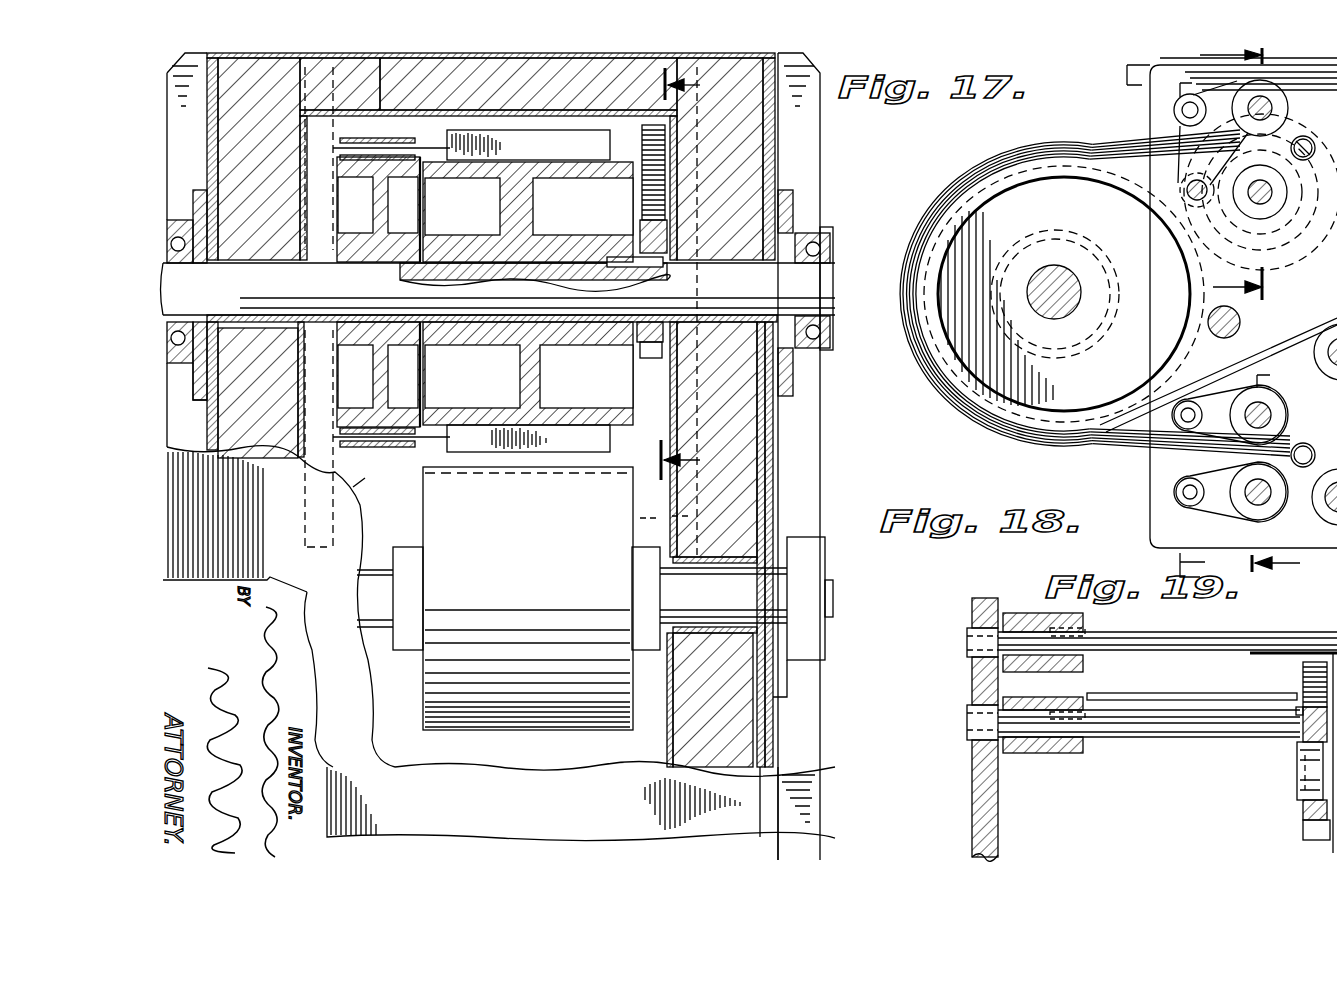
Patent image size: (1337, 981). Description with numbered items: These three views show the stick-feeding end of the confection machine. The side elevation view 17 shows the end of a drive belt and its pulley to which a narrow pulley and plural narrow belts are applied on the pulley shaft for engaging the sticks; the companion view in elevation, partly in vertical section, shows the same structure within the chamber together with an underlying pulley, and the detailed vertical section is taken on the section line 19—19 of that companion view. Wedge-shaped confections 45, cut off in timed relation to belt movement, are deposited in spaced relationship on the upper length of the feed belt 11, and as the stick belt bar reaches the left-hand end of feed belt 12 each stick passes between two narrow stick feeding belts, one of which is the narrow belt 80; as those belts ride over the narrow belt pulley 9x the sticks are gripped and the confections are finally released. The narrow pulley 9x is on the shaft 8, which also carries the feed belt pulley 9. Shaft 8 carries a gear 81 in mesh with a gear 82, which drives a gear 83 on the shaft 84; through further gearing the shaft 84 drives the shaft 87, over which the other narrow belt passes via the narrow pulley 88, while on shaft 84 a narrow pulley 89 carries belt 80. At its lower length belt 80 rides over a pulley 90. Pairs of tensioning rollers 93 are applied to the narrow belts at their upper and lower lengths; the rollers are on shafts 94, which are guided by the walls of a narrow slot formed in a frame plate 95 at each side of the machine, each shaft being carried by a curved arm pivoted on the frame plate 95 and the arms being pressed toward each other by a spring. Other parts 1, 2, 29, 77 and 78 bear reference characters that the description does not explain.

In FIG. 17, the frame 1 is at (737, 465).
In FIG. 17, the housing 2 is at (193, 150).
In FIG. 17, the shaft 8 is at (550, 280).
In FIG. 18, the shaft 8 is at (1074, 311).
In FIG. 17, the feed belt pulley 9 is at (553, 410).
In FIG. 17, the narrow belt pulley 9x is at (383, 378).
In FIG. 18, the narrow belt pulley 9x is at (1085, 378).
In FIG. 17, the feed belt 11 is at (528, 598).
In FIG. 18, the feed belt 11 is at (1317, 63).
In FIG. 19, the feed belt 11 is at (1156, 693).
In FIG. 18, the feed belt 12 is at (1211, 317).
In FIG. 17, the section line 17- 17 is at (658, 274).
In FIG. 18, the section line 17- 17 is at (1291, 569).
In FIG. 18, the section line 19— 19 is at (1246, 174).
In FIG. 17, the pulley 29 is at (395, 142).
In FIG. 18, the pulley 29 is at (1285, 100).
In FIG. 19, the pulley 29 is at (1015, 613).
In FIG. 17, the wedge-shaped confection 45 is at (598, 145).
In FIG. 18, the pulley 77 is at (1212, 276).
In FIG. 18, the belt 78 is at (1082, 348).
In FIG. 17, the narrow stick feeding belt 80 is at (398, 152).
In FIG. 19, the narrow stick feeding belt 80 is at (1050, 700).
In FIG. 17, the gear 81 is at (652, 358).
In FIG. 17, the gear 82 is at (650, 185).
In FIG. 19, the gear 82 is at (1297, 745).
In FIG. 17, the gear 83 is at (645, 165).
In FIG. 19, the gear 83 is at (1303, 675).
In FIG. 19, the shaft 84 is at (1182, 738).
In FIG. 18, the shaft 87 is at (1300, 136).
In FIG. 19, the shaft 87 is at (1166, 630).
In FIG. 18, the narrow pulley 88 is at (1273, 110).
In FIG. 19, the narrow pulley 88 is at (1083, 622).
In FIG. 19, the narrow pulley 89 is at (1083, 698).
In FIG. 18, the pulley 90 is at (1262, 403).
In FIG. 18, the tensioning rollers 93 is at (1174, 108).
In FIG. 18, the shafts 94 is at (1185, 118).
In FIG. 17, the frame plate 95 is at (521, 498).
In FIG. 19, the frame plate 95 is at (972, 766).